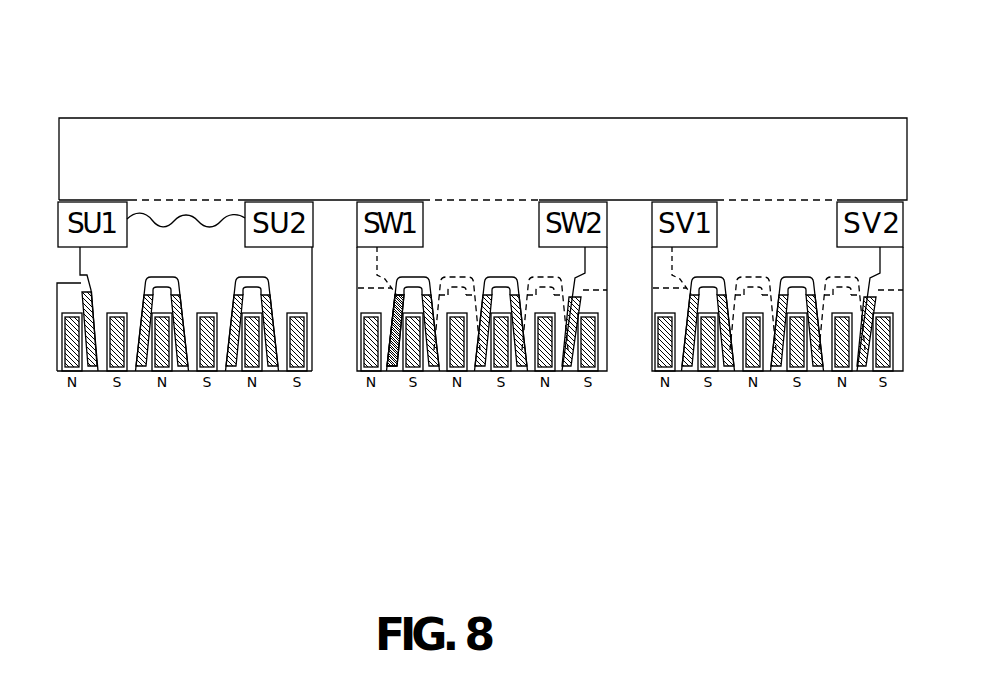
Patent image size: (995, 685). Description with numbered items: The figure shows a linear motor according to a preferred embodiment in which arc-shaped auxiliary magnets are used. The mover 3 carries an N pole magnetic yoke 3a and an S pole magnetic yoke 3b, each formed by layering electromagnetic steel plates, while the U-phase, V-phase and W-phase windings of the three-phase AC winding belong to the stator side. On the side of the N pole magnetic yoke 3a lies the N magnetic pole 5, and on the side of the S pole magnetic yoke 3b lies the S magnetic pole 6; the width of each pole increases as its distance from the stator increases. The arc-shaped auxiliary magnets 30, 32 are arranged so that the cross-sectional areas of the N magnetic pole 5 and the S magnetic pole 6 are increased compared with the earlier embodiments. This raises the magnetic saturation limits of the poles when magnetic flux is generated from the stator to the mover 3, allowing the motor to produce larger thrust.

The mover 3 is at (645, 118).
The N pole magnetic yoke 3a is at (469, 247).
The S pole magnetic yoke 3b is at (183, 247).
The N magnetic pole 5 is at (352, 362).
The arc-shaped auxiliary magnet 30 is at (432, 362).
The arc-shaped auxiliary magnet 32 is at (388, 362).
The S magnetic pole 6 is at (424, 363).